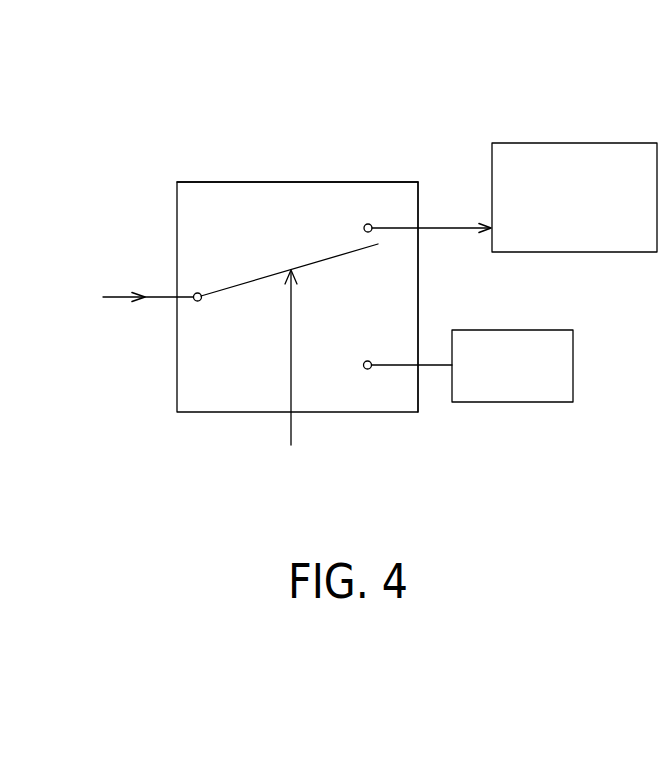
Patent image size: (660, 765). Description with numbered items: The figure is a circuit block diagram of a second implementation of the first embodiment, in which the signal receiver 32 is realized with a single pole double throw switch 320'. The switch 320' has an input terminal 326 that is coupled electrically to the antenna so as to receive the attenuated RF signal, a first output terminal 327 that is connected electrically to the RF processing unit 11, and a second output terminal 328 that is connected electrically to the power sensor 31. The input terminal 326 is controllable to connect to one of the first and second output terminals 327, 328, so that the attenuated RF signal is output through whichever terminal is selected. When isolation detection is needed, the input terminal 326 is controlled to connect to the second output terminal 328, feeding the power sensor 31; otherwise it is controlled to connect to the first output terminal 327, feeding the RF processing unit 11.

The RF processing unit 11 is at (602, 143).
The power sensor 31 is at (518, 330).
The signal receiver 32 is at (228, 130).
The single pole double throw switch 320' is at (323, 255).
The input terminal 326 is at (195, 293).
The first output terminal 327 is at (368, 224).
The second output terminal 328 is at (367, 372).